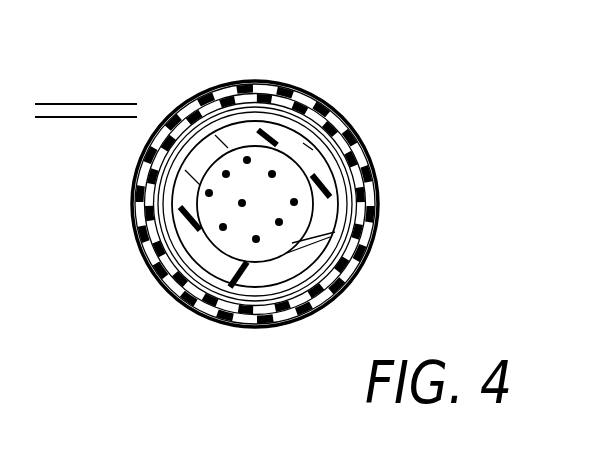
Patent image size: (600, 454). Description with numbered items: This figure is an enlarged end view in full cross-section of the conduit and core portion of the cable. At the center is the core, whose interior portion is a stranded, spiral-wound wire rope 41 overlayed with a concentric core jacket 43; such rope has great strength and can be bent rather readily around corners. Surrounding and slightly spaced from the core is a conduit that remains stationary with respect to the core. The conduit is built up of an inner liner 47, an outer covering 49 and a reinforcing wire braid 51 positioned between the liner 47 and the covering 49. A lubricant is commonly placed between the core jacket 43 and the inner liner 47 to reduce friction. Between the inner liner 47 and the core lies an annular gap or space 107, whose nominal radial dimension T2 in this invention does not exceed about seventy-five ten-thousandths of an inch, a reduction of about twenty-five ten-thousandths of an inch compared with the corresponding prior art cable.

The wire rope 41 is at (230, 240).
The core jacket 43 is at (258, 272).
The inner liner 47 is at (265, 110).
The outer covering 49 is at (365, 250).
The reinforcing wire braid 51 is at (363, 172).
The space 107 is at (243, 113).
The nominal radial dimension T2 is at (62, 150).